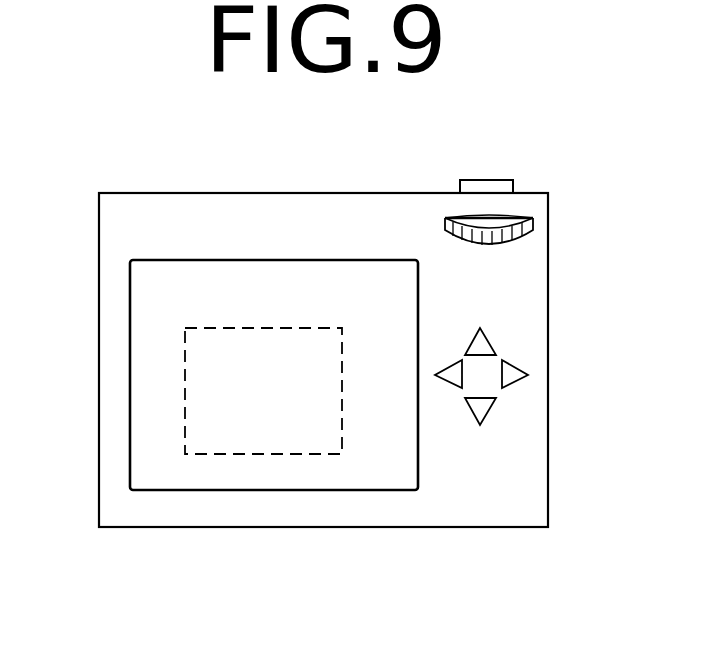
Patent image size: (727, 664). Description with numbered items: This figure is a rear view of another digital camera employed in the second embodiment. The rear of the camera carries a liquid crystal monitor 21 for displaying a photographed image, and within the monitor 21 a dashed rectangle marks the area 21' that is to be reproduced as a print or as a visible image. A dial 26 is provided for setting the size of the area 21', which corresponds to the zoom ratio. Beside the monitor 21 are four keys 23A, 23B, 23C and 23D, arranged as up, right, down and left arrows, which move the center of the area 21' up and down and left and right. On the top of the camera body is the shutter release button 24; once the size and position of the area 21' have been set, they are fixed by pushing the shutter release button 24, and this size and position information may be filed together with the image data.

The liquid crystal monitor 21 is at (289, 360).
The area 21' is at (263, 474).
The shutter release button 24 is at (514, 180).
The dial 26 is at (535, 222).
The key 23A is at (490, 336).
The key 23B is at (520, 366).
The key 23C is at (488, 407).
The key 23D is at (455, 388).